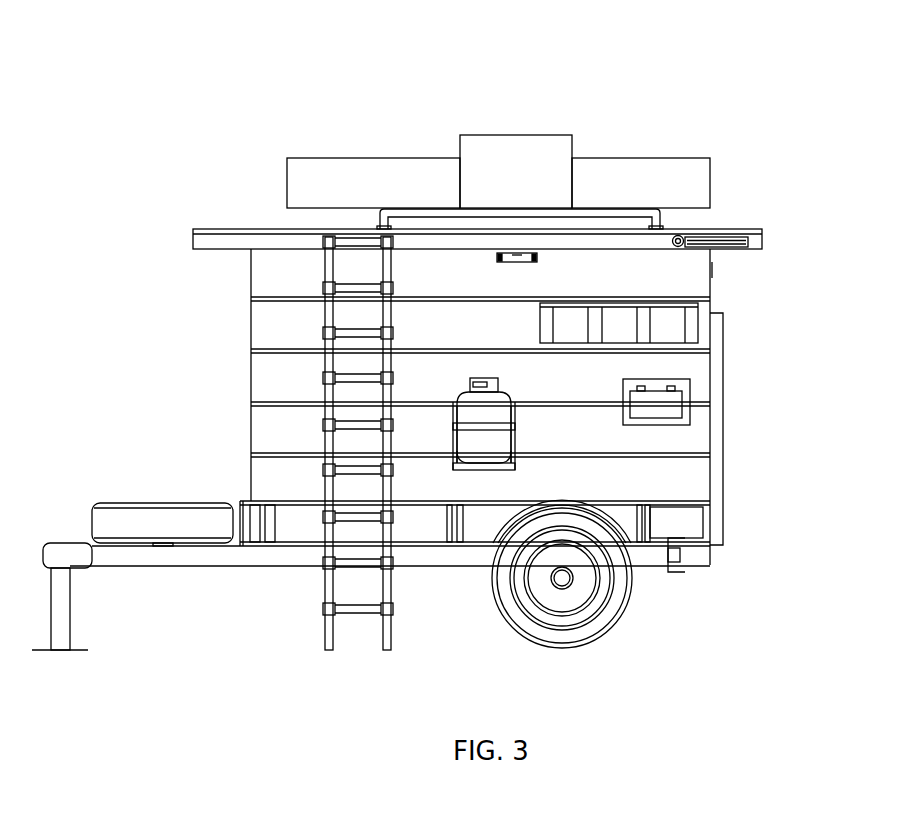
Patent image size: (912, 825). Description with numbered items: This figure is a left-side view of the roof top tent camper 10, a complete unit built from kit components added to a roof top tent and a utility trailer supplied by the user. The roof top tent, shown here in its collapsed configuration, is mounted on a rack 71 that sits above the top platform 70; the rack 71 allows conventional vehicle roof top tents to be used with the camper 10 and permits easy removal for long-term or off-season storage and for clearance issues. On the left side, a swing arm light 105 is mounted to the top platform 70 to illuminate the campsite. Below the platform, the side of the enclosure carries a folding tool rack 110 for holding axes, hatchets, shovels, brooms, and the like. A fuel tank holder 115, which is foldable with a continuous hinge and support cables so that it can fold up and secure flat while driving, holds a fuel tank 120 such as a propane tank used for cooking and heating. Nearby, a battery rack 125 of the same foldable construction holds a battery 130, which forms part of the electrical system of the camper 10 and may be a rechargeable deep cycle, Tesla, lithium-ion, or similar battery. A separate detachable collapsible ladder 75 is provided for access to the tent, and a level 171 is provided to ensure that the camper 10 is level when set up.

The camper 10 is at (90, 147).
The top platform 70 is at (218, 248).
The rack 71 is at (656, 210).
The detachable collapsible ladder 75 is at (387, 597).
The swing arm light 105 is at (718, 242).
The folding tool rack 110 is at (677, 329).
The fuel tank holder 115 is at (458, 428).
The fuel tank 120 is at (477, 448).
The battery rack 125 is at (673, 408).
The battery 130 is at (678, 412).
The level 171 is at (510, 255).